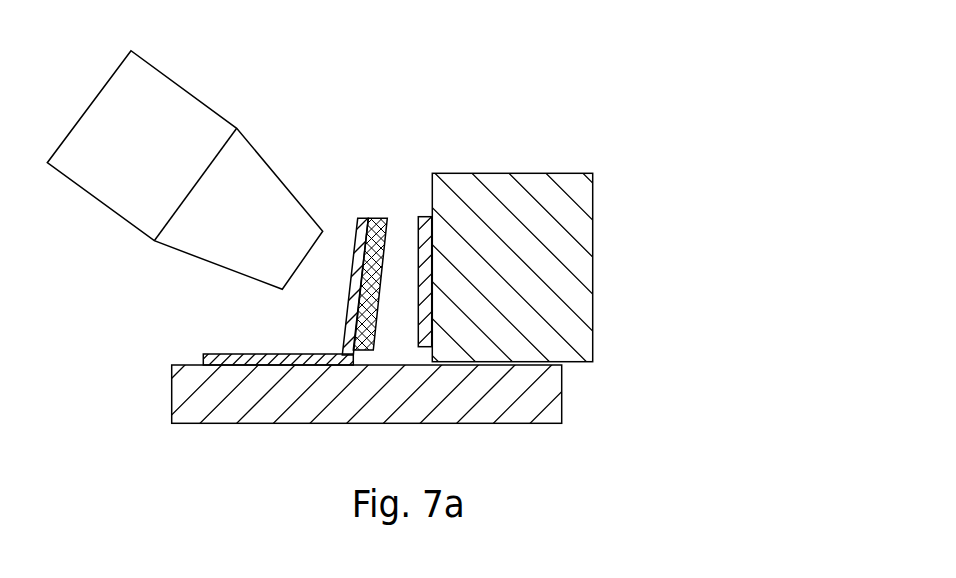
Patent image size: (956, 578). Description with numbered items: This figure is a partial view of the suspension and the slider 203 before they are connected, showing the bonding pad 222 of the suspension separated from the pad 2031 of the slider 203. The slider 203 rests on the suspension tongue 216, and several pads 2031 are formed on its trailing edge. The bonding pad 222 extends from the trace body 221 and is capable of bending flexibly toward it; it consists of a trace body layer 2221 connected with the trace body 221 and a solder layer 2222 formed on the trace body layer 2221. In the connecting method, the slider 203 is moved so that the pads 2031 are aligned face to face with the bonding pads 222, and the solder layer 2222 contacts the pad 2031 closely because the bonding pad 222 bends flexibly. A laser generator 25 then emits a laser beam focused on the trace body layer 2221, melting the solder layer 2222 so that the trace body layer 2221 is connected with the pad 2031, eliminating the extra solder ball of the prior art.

The laser generator 25 is at (199, 129).
The bonding pad 222 is at (380, 218).
The trace body layer 2221 is at (358, 220).
The solder layer 2222 is at (377, 225).
The pad 2031 is at (430, 217).
The slider 203 is at (568, 297).
The trace body 221 is at (222, 360).
The suspension tongue 216 is at (547, 411).